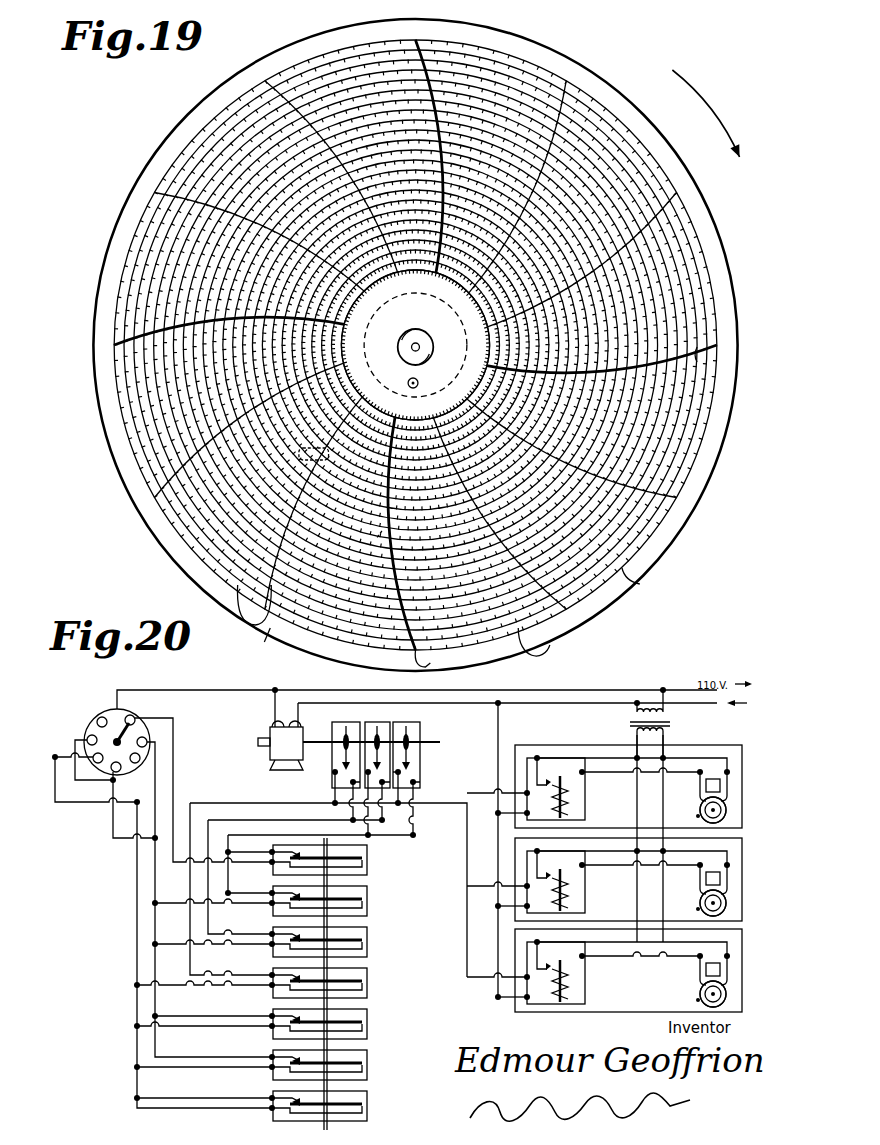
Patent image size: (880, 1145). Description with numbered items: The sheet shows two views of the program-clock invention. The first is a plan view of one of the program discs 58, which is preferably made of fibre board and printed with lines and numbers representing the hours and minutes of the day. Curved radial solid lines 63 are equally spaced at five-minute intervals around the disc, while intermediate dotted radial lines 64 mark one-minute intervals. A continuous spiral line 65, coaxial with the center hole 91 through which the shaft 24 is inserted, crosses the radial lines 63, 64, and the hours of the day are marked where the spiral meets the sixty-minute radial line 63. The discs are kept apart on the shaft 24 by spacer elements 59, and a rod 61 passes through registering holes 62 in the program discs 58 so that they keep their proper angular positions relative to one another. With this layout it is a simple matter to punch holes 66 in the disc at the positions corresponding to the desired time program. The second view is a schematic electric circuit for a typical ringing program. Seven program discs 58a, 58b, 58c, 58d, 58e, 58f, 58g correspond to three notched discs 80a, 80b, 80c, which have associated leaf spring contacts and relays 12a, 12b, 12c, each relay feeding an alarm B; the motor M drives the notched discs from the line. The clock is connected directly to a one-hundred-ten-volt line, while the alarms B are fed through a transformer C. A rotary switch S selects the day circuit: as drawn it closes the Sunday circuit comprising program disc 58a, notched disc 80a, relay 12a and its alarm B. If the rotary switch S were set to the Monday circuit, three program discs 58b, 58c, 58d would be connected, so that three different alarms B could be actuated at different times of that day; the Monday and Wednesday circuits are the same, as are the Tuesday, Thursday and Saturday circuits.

In FIG. 19, the program disc 58 is at (314, 129).
In FIG. 19, the spacer element 59 is at (415, 341).
In FIG. 19, the shaft 24 is at (401, 347).
In FIG. 19, the center hole 91 is at (434, 334).
In FIG. 19, the rod 61 is at (398, 374).
In FIG. 19, the registering hole 62 is at (436, 373).
In FIG. 19, the curved radial solid line 63 is at (480, 497).
In FIG. 19, the intermediate dotted radial line 64 is at (460, 614).
In FIG. 19, the continuous spiral line 65 is at (464, 467).
In FIG. 19, the hole 66 is at (365, 484).
In FIG. 20, the rotary switch S is at (97, 710).
In FIG. 20, the motor M is at (349, 745).
In FIG. 20, the notched disc 80a is at (408, 728).
In FIG. 20, the notched disc 80b is at (377, 728).
In FIG. 20, the notched disc 80c is at (340, 730).
In FIG. 20, the transformer C is at (680, 724).
In FIG. 20, the relay 12a is at (583, 806).
In FIG. 20, the relay 12b is at (628, 879).
In FIG. 20, the relay 12c is at (628, 970).
In FIG. 20, the alarm B is at (735, 802).
In FIG. 20, the program disc 58a is at (368, 863).
In FIG. 20, the program disc 58b is at (368, 904).
In FIG. 20, the program disc 58c is at (368, 945).
In FIG. 20, the program disc 58d is at (368, 986).
In FIG. 20, the program disc 58e is at (368, 1027).
In FIG. 20, the program disc 58f is at (368, 1068).
In FIG. 20, the program disc 58g is at (368, 1109).